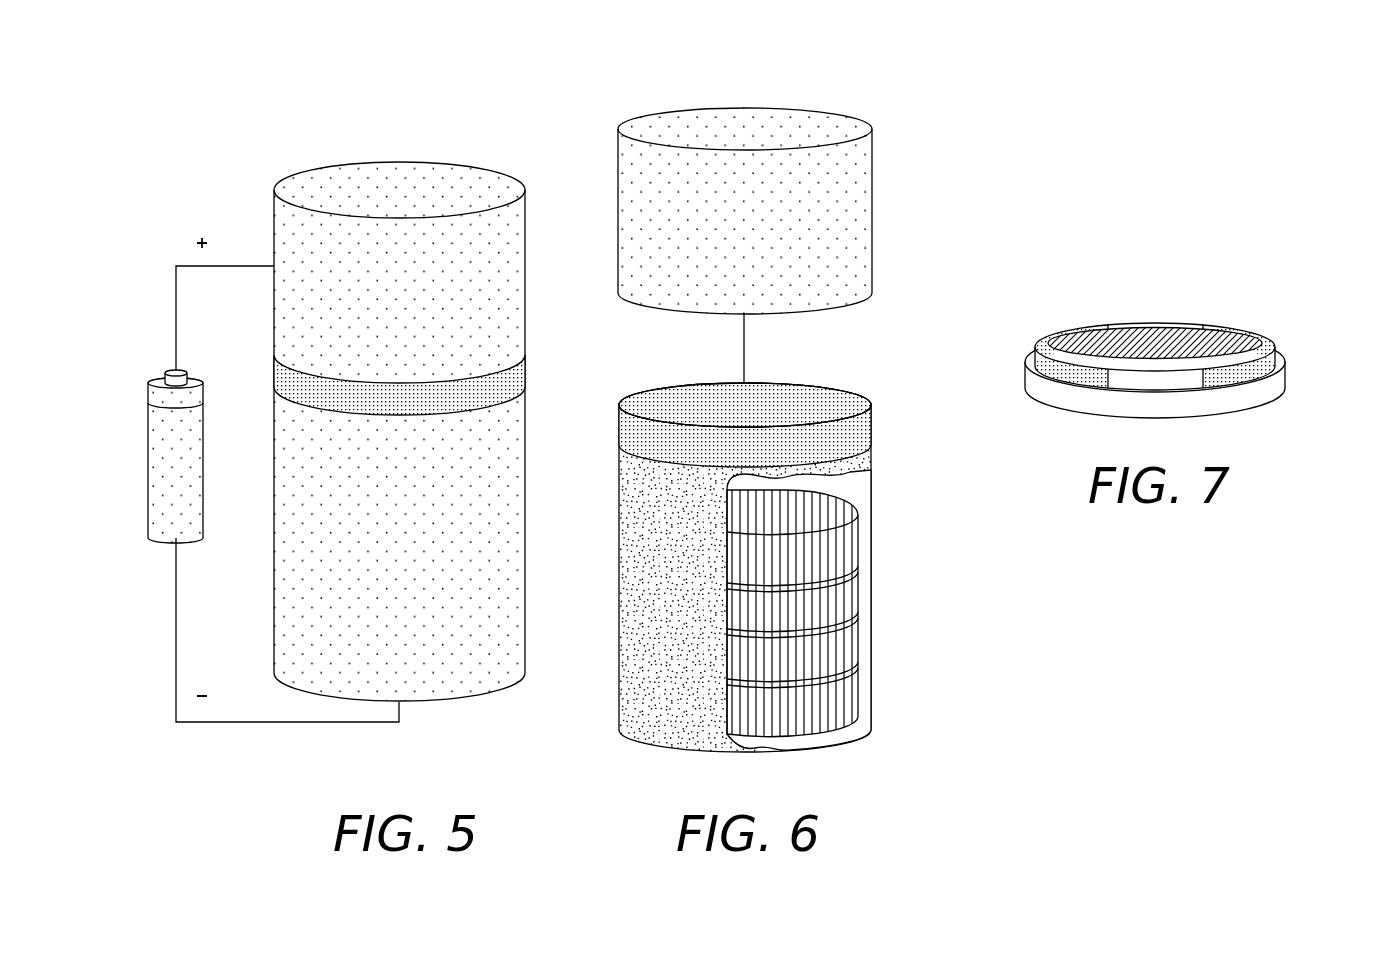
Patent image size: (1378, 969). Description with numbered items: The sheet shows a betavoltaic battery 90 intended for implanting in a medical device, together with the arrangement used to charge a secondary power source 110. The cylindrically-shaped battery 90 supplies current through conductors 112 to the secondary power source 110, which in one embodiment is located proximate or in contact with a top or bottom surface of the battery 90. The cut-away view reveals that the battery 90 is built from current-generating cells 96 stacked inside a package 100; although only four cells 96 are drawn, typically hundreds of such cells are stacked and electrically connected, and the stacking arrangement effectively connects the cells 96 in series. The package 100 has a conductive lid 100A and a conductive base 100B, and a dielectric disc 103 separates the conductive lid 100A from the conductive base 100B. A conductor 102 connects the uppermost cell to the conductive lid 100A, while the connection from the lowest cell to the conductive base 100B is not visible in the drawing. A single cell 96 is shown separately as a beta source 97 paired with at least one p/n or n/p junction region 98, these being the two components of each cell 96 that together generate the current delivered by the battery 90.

In FIG. 5, the betavoltaic battery 90 is at (238, 142).
In FIG. 6, the betavoltaic battery 90 is at (576, 82).
In FIG. 5, the secondary power source 110 is at (120, 425).
In FIG. 5, the conductors 112 is at (165, 285).
In FIG. 6, the package 100 is at (915, 82).
In FIG. 6, the conductive lid 100A is at (872, 207).
In FIG. 6, the conductive base 100B is at (739, 567).
In FIG. 6, the conductor 102 is at (744, 345).
In FIG. 6, the dielectric disc 103 is at (871, 421).
In FIG. 6, the current-generating cells 96 is at (860, 533).
In FIG. 7, the current-generating cells 96 is at (1166, 348).
In FIG. 7, the beta source 97 is at (1053, 347).
In FIG. 7, the p/n or n/p junction 98 is at (1287, 367).